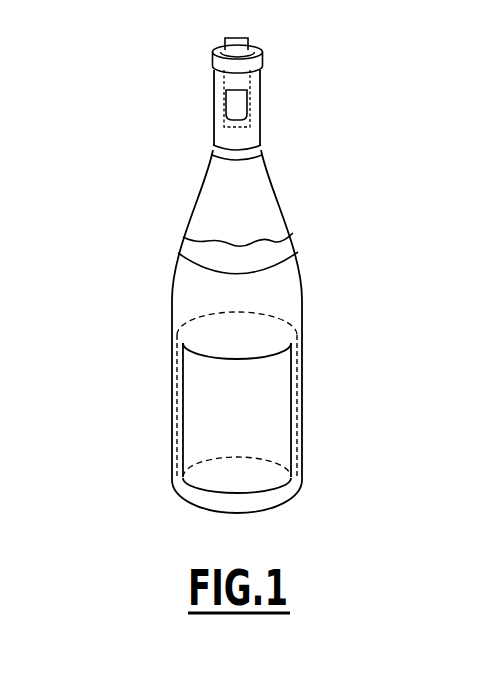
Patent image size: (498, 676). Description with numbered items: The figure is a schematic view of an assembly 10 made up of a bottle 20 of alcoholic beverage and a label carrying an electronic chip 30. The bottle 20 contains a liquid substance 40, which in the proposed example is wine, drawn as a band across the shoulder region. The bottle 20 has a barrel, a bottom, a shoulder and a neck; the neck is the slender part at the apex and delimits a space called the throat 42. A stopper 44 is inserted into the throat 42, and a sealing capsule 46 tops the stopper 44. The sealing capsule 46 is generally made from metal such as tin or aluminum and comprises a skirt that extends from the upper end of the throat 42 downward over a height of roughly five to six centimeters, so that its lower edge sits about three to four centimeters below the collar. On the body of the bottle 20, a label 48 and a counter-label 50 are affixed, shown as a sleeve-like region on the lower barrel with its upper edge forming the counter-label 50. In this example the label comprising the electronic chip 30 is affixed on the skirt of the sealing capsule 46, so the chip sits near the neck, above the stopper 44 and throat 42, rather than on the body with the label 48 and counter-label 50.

The assembly 10 is at (214, 269).
The bottle 20 is at (303, 457).
The electronic chip 30 is at (242, 105).
The liquid substance 40 is at (273, 252).
The throat 42 is at (257, 133).
The stopper 44 is at (227, 82).
The sealing capsule 46 is at (227, 135).
The label 48 is at (283, 415).
The counter-label 50 is at (283, 342).